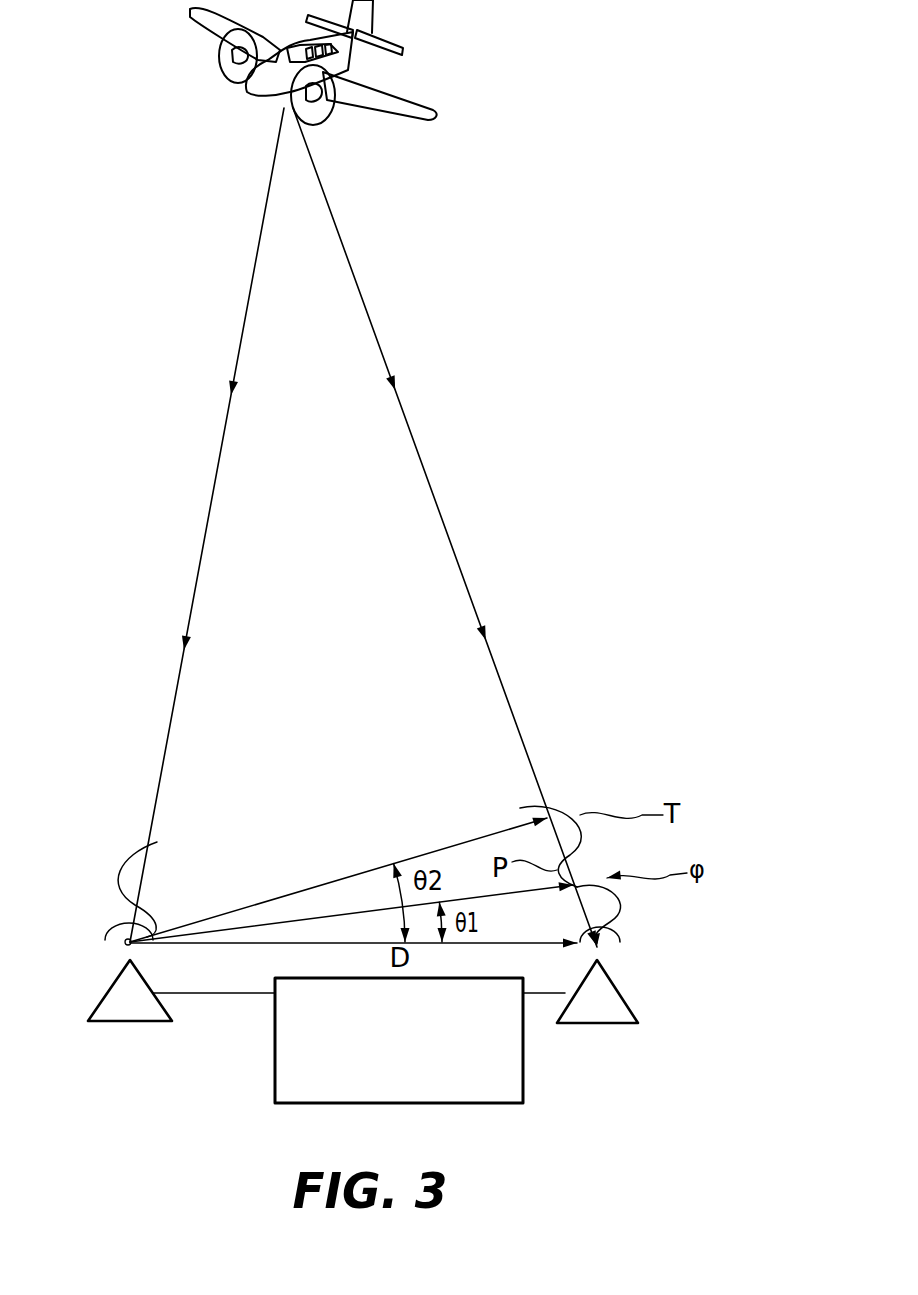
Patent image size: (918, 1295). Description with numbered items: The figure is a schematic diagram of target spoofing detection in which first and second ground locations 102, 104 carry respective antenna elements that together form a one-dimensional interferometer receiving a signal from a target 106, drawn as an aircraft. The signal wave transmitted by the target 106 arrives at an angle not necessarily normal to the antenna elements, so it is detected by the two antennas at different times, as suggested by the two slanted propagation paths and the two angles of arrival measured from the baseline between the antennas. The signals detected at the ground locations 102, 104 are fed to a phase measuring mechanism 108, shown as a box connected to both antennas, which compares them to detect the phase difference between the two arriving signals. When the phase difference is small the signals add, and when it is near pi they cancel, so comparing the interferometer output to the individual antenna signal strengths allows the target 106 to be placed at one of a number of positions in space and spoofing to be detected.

The first ground location 102 is at (58, 1063).
The second ground location 104 is at (659, 1062).
The target 106 is at (375, 80).
The phase measuring mechanism 108 is at (377, 1080).